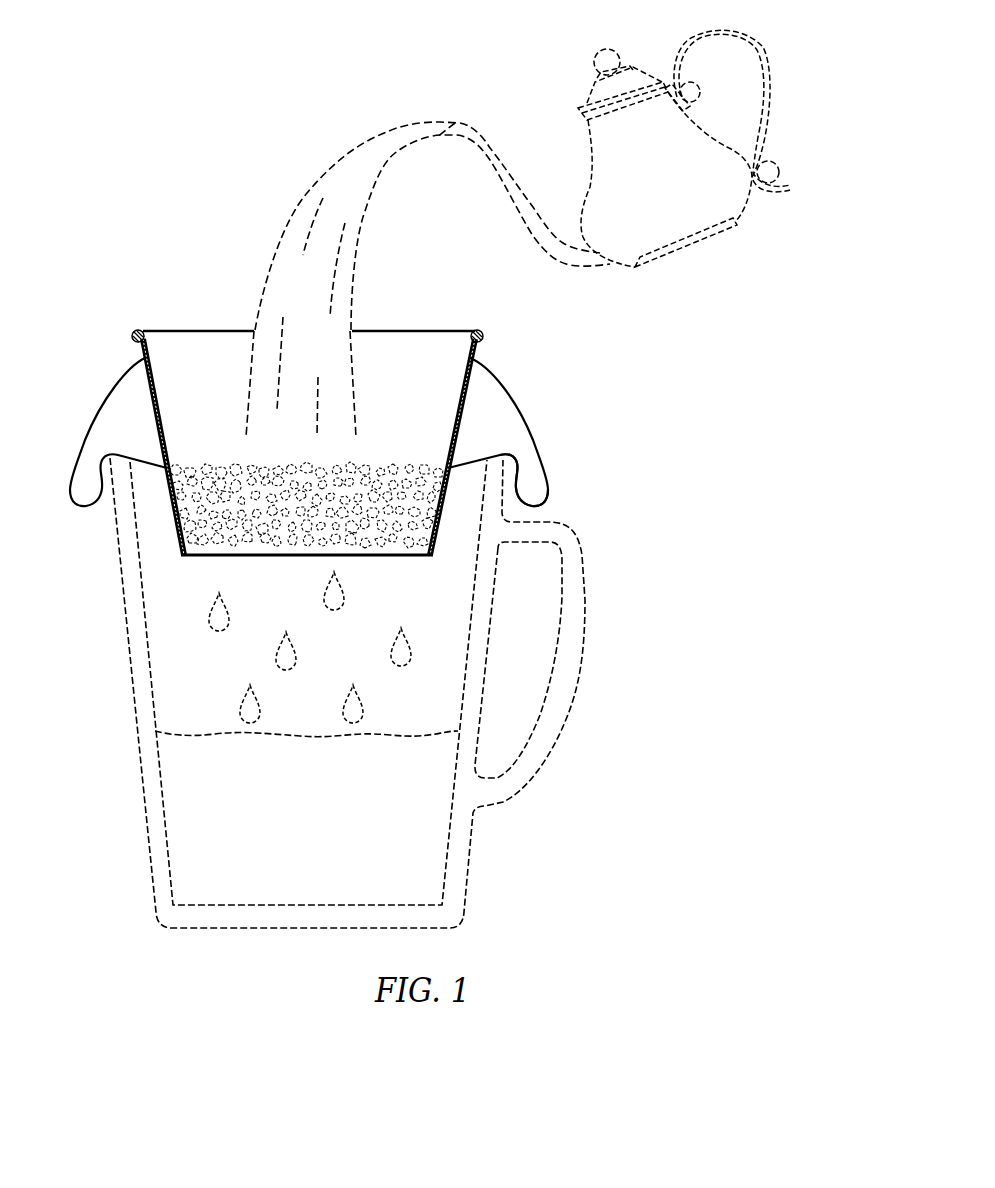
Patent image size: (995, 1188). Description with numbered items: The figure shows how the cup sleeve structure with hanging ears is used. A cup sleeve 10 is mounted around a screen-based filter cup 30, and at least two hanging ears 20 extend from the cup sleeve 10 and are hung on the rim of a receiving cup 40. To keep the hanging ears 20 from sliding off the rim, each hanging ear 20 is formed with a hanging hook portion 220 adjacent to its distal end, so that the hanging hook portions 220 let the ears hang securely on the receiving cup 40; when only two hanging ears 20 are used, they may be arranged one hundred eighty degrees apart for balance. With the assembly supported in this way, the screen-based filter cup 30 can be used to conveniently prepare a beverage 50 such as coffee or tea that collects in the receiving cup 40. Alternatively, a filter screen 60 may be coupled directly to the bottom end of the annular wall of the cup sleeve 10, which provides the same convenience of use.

The cup sleeve 10 is at (332, 461).
The hanging ears 20 is at (502, 405).
The hanging hook portion 220 is at (512, 457).
The screen-based filter cup 30 is at (468, 363).
The receiving cup 40 is at (463, 843).
The beverage 50 is at (178, 517).
The filter screen 60 is at (215, 557).